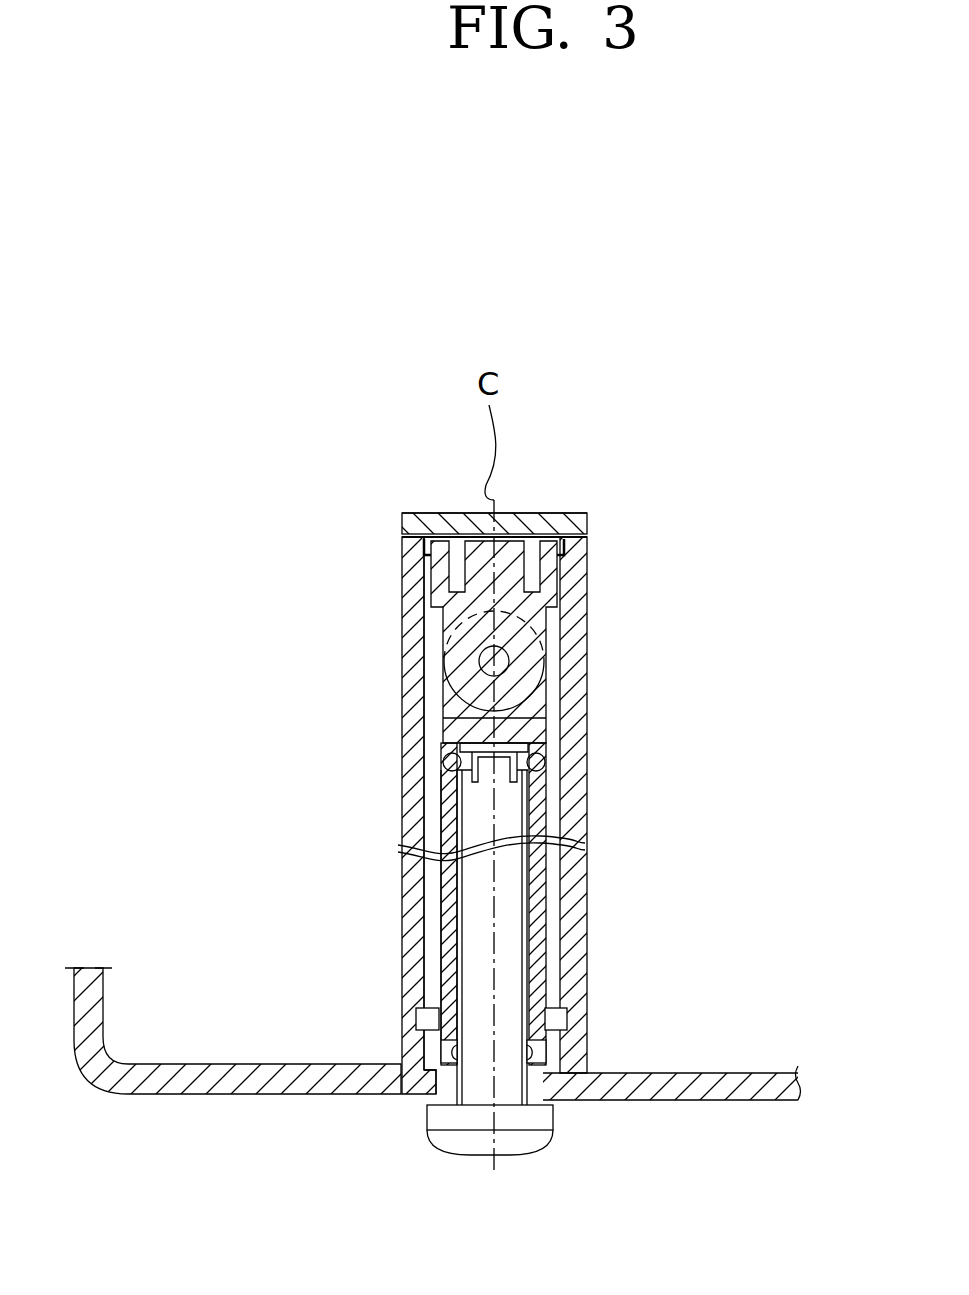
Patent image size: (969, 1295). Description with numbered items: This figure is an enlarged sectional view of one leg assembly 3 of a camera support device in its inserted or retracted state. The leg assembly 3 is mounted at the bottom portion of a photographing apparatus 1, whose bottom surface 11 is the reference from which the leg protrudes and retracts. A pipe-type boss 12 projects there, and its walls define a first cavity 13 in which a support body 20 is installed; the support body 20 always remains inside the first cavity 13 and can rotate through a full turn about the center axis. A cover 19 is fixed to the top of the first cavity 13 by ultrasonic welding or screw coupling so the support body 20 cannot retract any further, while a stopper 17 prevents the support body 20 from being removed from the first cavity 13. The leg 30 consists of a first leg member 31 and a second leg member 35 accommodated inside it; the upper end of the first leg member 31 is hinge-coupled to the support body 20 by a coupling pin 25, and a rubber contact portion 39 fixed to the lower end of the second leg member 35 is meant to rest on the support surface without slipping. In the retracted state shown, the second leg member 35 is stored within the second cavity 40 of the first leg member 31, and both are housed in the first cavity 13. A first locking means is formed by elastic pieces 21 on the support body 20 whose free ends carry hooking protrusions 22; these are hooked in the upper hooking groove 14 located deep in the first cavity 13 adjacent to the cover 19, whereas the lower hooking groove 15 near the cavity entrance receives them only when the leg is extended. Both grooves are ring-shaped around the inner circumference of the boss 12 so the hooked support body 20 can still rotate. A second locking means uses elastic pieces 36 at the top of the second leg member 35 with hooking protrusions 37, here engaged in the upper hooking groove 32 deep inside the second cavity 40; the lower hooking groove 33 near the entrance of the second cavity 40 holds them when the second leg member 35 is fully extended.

The photographing apparatus 1 is at (74, 993).
The leg assembly 3 is at (410, 930).
The bottom surface 11 is at (233, 1094).
The boss 12 is at (580, 707).
The first cavity 13 is at (556, 978).
The upper hooking groove 14 is at (588, 517).
The lower hooking groove 15 is at (566, 1018).
The stopper 17 is at (420, 1085).
The cover 19 is at (433, 513).
The support body 20 is at (518, 513).
The elastic pieces 21 is at (431, 578).
The hooking protrusions 22 is at (420, 546).
The coupling pin 25 is at (480, 664).
The leg 30 is at (418, 994).
The first leg member 31 is at (585, 850).
The upper hooking groove 32 is at (532, 748).
The lower hooking groove 33 is at (548, 1055).
The second leg member 35 is at (500, 926).
The elastic pieces 36 is at (455, 777).
The hooking protrusions 37 is at (450, 762).
The contact portion 39 is at (513, 1153).
The second cavity 40 is at (447, 889).